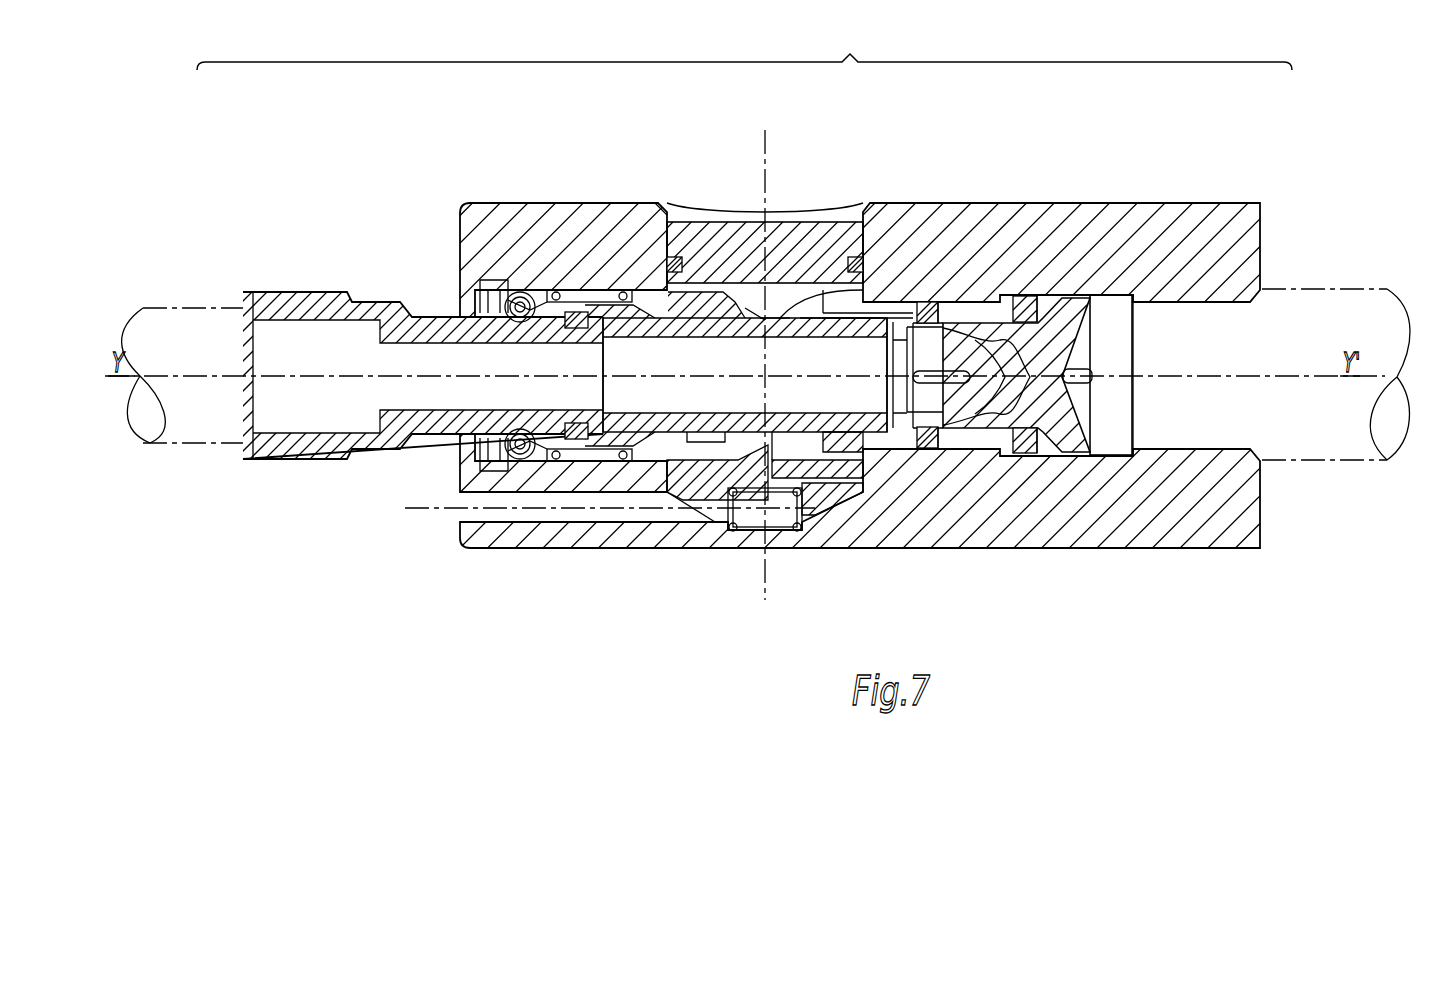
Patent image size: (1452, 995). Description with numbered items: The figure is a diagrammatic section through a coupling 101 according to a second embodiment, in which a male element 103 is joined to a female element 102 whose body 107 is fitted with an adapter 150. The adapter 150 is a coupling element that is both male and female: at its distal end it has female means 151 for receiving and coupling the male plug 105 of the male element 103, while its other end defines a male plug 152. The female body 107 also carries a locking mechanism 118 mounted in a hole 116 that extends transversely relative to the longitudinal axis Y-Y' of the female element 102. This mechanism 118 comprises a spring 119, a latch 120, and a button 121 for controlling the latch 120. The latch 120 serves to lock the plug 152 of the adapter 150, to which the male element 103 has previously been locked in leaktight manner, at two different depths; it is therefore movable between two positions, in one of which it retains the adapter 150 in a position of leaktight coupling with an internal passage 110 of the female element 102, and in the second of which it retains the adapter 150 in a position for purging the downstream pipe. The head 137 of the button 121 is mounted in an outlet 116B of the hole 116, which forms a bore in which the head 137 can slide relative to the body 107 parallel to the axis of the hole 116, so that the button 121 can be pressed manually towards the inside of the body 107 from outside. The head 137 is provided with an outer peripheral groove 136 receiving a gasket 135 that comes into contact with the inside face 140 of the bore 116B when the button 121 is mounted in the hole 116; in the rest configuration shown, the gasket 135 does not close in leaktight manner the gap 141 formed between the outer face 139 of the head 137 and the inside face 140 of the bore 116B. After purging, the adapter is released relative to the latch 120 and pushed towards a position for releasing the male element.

The coupling 101 is at (744, 44).
The female element 102 is at (1190, 178).
The male element 103 is at (320, 255).
The male plug 105 is at (576, 343).
The body 107 is at (1240, 212).
The internal passage 110 is at (1195, 415).
The hole 116 is at (770, 303).
The outlet 116B is at (857, 290).
The locking mechanism 118 is at (818, 207).
The spring 119 is at (733, 532).
The latch 120 is at (827, 495).
The button 121 is at (758, 215).
The gasket 135 is at (645, 313).
The outer peripheral groove 136 is at (867, 268).
The head 137 is at (712, 222).
The outer face 139 is at (663, 226).
The inside face 140 is at (757, 327).
The gap 141 is at (668, 215).
The adapter 150 is at (545, 292).
The female means 151 is at (612, 290).
The male plug 152 is at (817, 330).